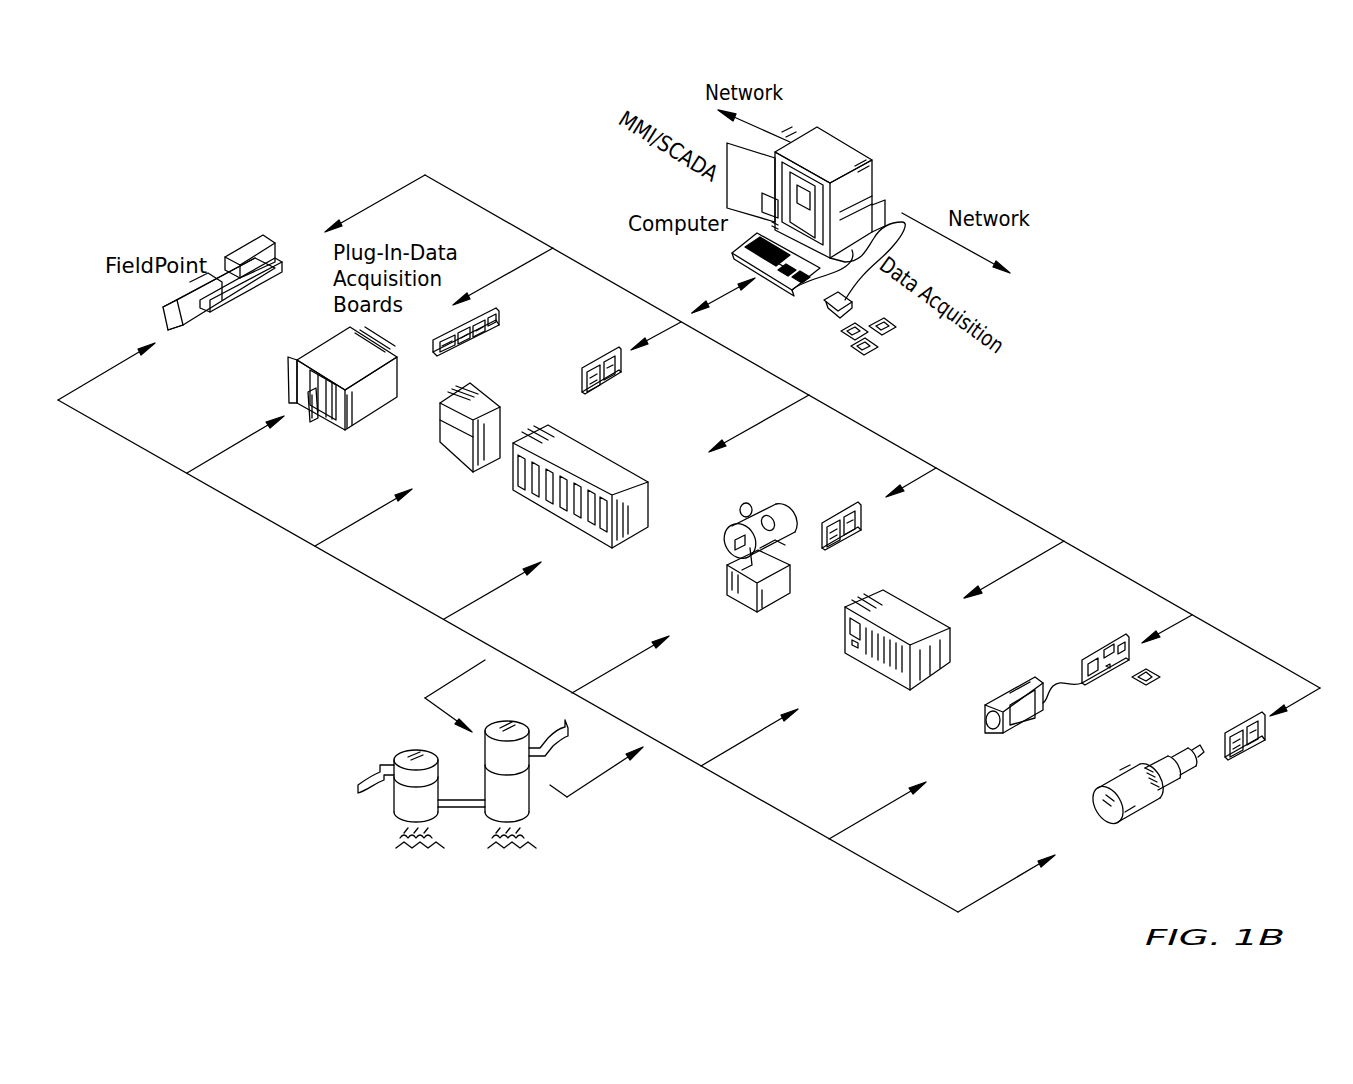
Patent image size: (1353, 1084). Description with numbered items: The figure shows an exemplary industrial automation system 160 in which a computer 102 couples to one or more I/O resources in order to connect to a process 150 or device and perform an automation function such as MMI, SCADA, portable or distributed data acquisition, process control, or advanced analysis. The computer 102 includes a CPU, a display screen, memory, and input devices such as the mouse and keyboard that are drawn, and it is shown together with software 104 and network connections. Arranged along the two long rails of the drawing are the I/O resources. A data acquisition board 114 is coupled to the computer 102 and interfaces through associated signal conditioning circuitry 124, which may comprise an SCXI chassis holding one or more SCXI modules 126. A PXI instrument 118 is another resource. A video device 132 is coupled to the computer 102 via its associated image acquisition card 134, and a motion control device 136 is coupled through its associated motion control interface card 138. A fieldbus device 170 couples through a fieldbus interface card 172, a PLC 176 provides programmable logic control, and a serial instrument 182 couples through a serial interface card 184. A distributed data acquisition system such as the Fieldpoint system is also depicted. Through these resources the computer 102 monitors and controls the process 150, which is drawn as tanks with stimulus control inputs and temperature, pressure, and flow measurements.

The computer 102 is at (838, 145).
The software 104 is at (870, 352).
The data acquisition board 114 is at (492, 307).
The PXI instrument 118 is at (890, 603).
The signal conditioning circuitry 124 is at (320, 352).
The SCXI module 126 is at (312, 412).
The video device 132 is at (1027, 677).
The image acquisition card 134 is at (1098, 655).
The motion control device 136 is at (1125, 813).
The motion control interface card 138 is at (1245, 748).
The process 150 is at (368, 780).
The industrial automation system 160 is at (1182, 212).
The fieldbus device 170 is at (772, 598).
The fieldbus interface card 172 is at (850, 502).
The PLC 176 is at (592, 472).
The serial instrument 182 is at (448, 450).
The serial interface card 184 is at (598, 363).